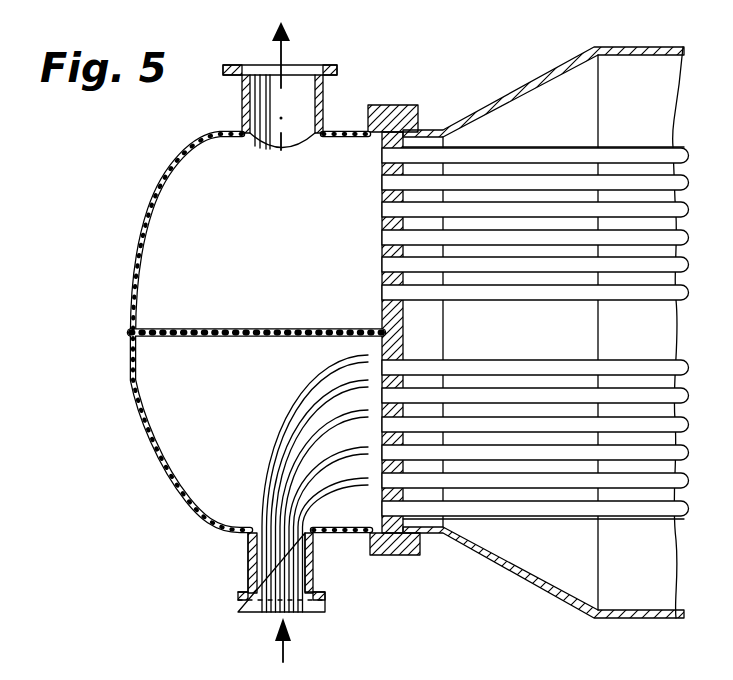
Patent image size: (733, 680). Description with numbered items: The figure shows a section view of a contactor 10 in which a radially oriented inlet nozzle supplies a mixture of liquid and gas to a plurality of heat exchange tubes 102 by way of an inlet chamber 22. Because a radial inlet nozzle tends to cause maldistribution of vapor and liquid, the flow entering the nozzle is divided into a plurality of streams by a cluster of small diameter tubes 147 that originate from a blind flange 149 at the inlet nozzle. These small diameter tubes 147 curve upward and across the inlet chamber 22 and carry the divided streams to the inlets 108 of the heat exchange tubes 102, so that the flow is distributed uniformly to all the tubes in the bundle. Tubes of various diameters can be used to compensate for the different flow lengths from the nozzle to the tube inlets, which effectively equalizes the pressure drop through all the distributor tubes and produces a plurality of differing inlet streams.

The contactor 10 is at (611, 618).
The inlet chamber 22 is at (151, 372).
The heat exchange tubes 102 is at (509, 465).
The tube inlets 108 is at (393, 429).
The small diameter tubes 147 is at (267, 468).
The blind flange 149 is at (238, 607).